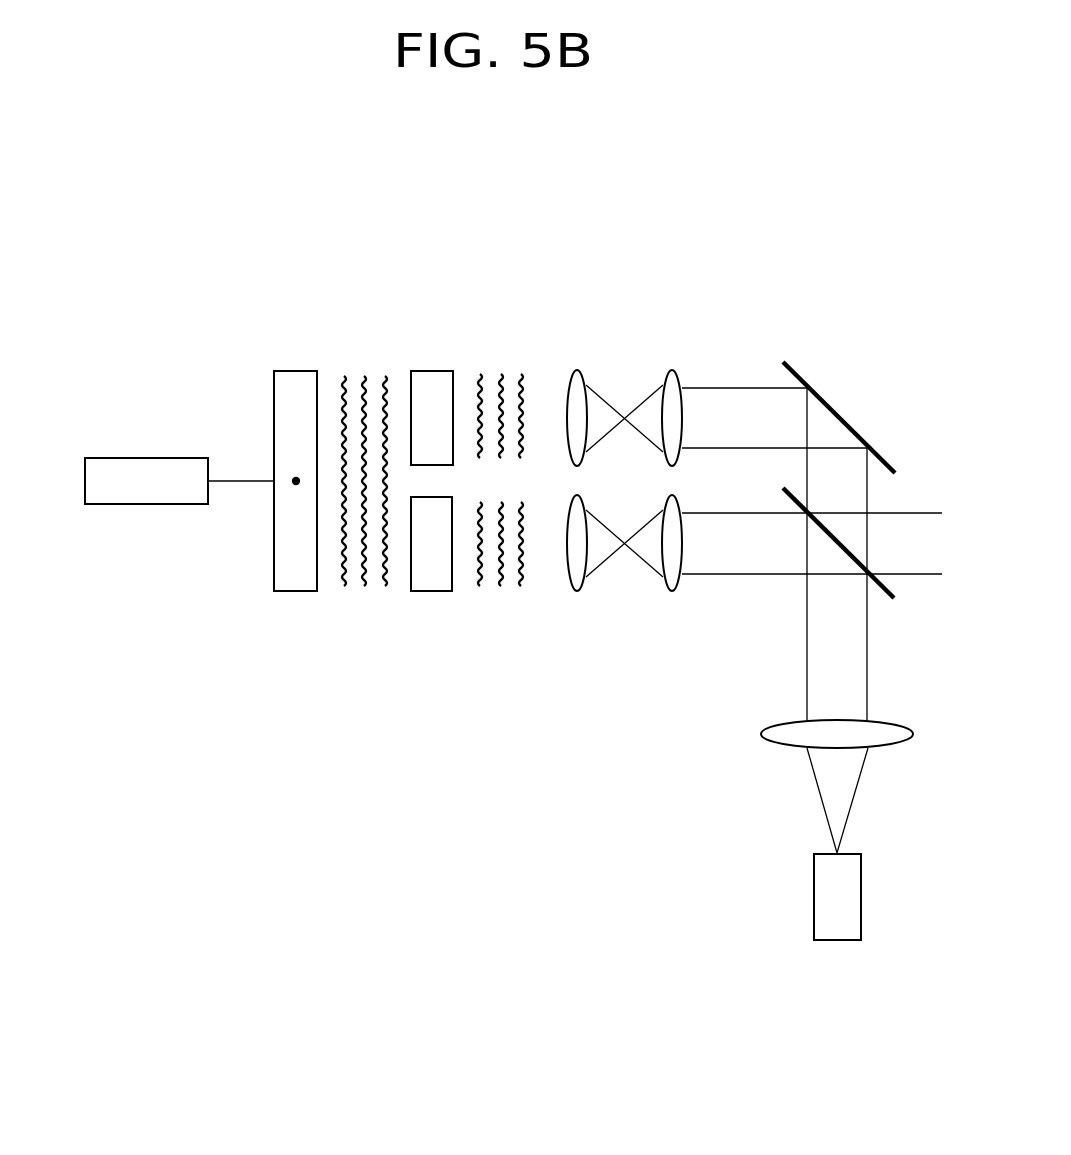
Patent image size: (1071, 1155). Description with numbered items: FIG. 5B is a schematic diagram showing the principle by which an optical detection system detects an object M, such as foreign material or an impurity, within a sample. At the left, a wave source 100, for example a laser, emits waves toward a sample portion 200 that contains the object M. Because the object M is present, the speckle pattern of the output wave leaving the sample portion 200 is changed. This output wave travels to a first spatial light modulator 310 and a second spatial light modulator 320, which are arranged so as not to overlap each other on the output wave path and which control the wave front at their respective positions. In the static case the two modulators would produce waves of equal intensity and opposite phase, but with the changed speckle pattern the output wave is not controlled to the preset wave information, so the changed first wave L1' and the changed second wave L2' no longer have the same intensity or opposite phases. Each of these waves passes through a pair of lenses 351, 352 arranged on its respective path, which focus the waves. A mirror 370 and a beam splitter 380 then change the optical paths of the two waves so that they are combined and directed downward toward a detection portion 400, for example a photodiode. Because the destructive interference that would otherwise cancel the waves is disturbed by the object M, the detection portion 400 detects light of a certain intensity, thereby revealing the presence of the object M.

The wave source 100 is at (162, 505).
The sample portion 200 is at (295, 592).
The object M is at (296, 481).
The first spatial light modulator 310 is at (432, 371).
The second spatial light modulator 320 is at (432, 592).
The changed first wave L1' is at (510, 363).
The changed second wave L2' is at (507, 591).
The lens 351 is at (578, 368).
The lens 352 is at (673, 368).
The mirror 370 is at (826, 399).
The beam splitter 380 is at (887, 598).
The detection portion 400 is at (861, 898).